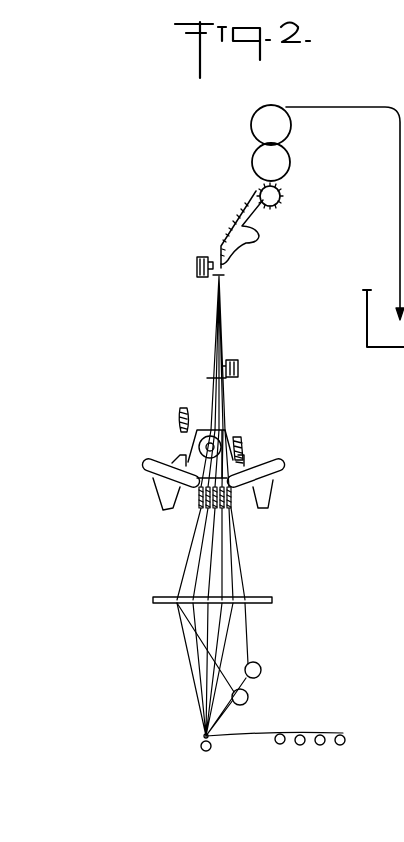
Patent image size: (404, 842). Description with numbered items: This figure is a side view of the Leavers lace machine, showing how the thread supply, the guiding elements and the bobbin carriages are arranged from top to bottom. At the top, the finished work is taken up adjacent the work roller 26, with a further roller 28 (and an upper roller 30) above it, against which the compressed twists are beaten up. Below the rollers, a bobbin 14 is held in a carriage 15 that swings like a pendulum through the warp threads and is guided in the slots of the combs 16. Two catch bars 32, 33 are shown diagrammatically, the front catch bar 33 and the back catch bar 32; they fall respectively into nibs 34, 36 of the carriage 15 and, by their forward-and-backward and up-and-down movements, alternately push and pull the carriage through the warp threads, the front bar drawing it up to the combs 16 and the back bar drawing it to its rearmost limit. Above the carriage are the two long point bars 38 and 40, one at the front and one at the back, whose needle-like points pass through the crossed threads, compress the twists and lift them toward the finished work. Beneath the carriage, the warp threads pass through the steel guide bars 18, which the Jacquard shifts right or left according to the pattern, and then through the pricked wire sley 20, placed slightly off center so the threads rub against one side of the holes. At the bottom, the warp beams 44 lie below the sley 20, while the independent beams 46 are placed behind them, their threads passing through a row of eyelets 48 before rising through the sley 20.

The upper roll 30 is at (281, 127).
The roller 28 is at (283, 160).
The work roller 26 is at (283, 193).
The point bar 38 is at (196, 266).
The point bar 40 is at (240, 372).
The bobbin 14 is at (204, 442).
The carriage 15 is at (224, 438).
The catch bar 33 is at (178, 418).
The catch bar 32 is at (246, 441).
The nib 34 is at (246, 461).
The nib 36 is at (181, 456).
The comb 16 is at (143, 465).
The steel bar 18 is at (232, 500).
The sley 20 is at (266, 598).
The warp beam 44 is at (262, 668).
The eyelet 48 is at (202, 736).
The independent beam 46 is at (318, 746).